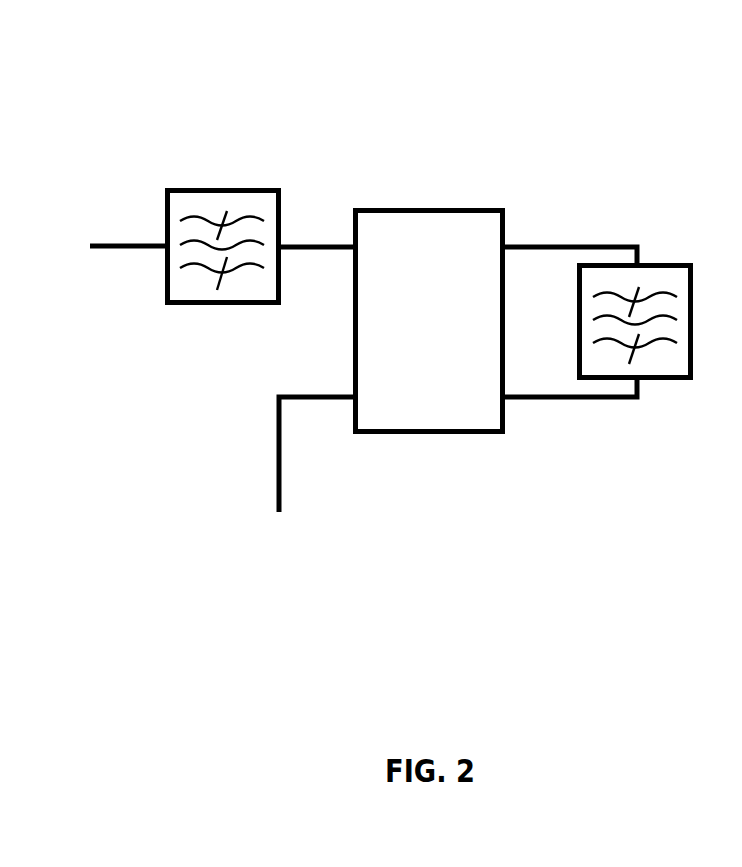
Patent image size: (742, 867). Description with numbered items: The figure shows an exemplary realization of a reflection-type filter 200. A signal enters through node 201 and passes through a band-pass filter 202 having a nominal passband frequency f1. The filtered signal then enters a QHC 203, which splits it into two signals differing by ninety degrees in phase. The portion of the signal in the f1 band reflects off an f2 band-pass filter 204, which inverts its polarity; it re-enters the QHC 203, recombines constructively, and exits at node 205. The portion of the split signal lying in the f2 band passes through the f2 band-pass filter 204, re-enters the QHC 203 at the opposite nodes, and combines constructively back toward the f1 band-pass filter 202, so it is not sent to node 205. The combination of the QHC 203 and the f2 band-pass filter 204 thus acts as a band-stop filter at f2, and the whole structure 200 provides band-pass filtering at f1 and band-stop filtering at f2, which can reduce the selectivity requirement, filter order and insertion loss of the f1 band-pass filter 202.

The reflection-type filter 200 is at (148, 93).
The input node 201 is at (113, 250).
The f1 band-pass filter 202 is at (232, 305).
The QHC 203 is at (442, 207).
The f2 band-pass filter 204 is at (682, 382).
The output node 205 is at (281, 470).